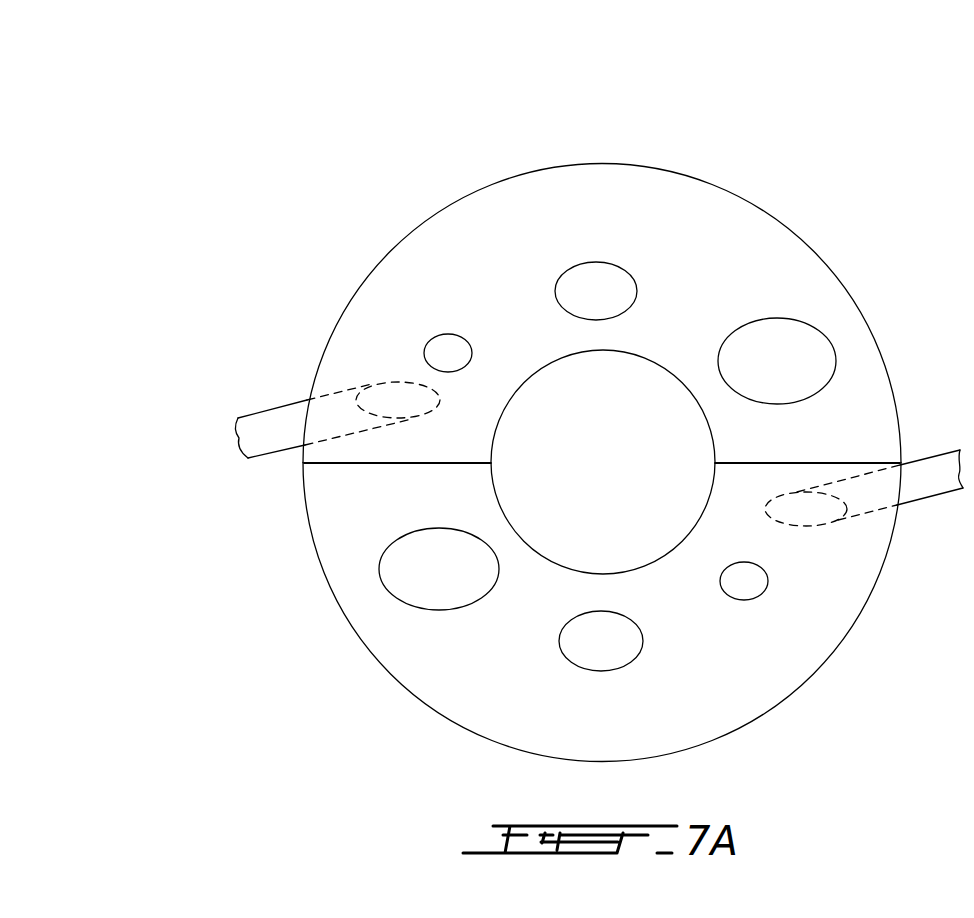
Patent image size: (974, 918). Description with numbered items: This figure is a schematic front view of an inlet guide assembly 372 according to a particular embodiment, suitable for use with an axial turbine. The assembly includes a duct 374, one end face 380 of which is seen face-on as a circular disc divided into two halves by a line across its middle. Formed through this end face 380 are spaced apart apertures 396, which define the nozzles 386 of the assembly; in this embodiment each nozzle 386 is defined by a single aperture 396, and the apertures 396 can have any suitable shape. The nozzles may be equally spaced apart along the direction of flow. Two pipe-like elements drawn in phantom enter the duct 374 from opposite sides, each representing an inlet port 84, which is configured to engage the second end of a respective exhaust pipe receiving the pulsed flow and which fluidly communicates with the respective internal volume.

The inlet guide assembly 372 is at (272, 177).
The duct 374 is at (365, 280).
The end face 380 is at (348, 515).
The nozzle 386 is at (612, 260).
The aperture 396 is at (587, 283).
The inlet port 84 is at (383, 400).